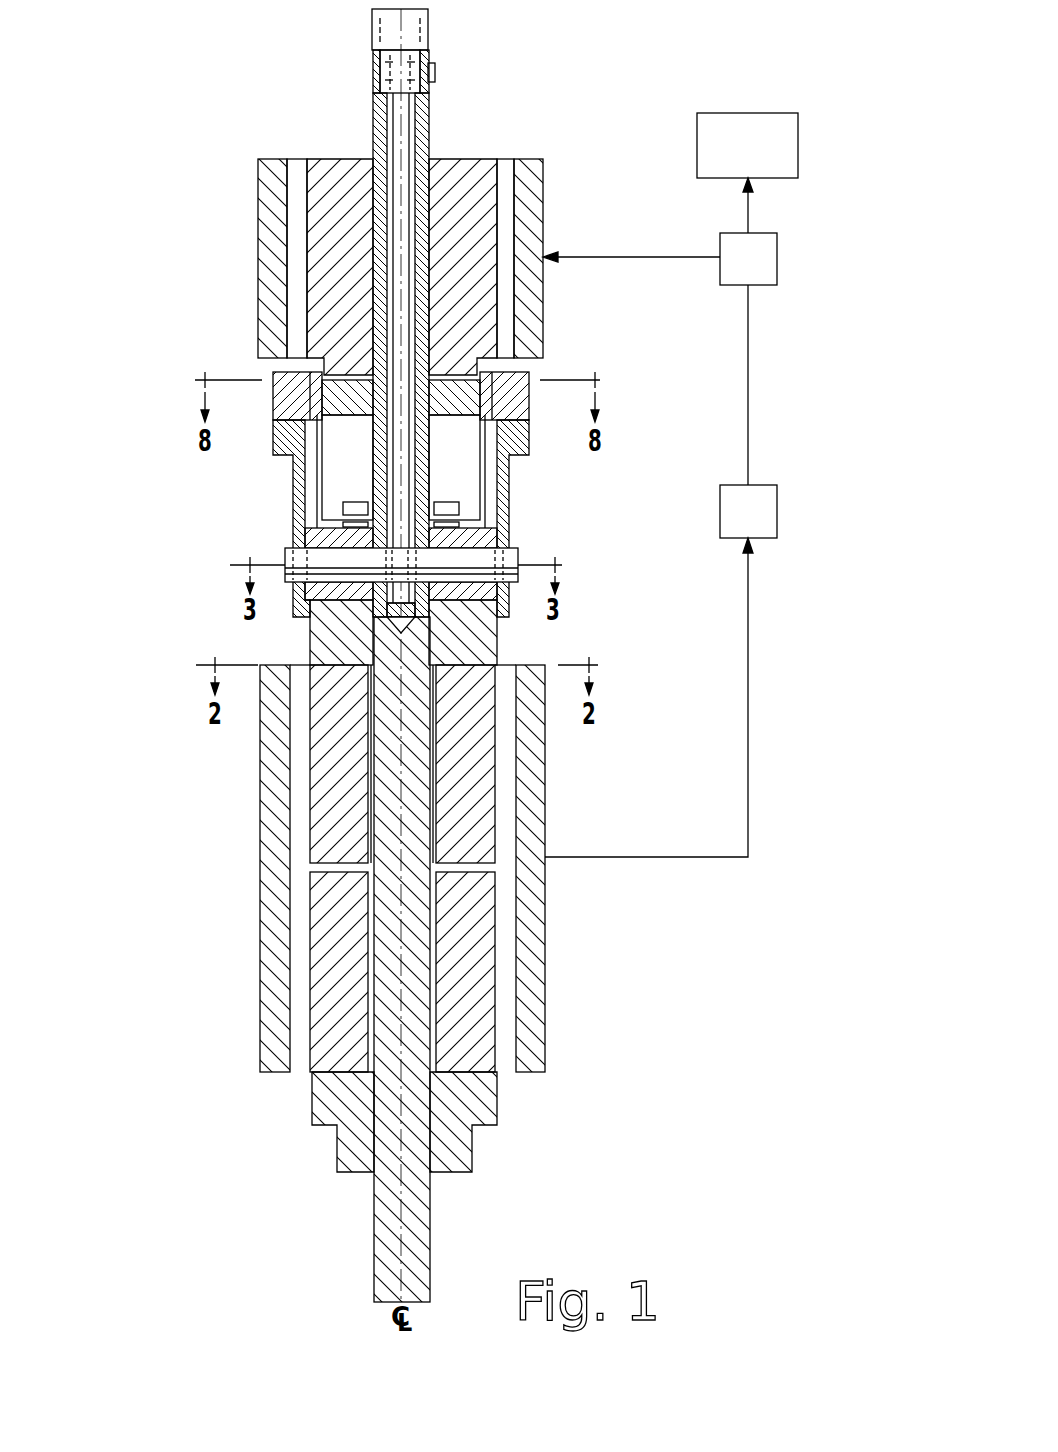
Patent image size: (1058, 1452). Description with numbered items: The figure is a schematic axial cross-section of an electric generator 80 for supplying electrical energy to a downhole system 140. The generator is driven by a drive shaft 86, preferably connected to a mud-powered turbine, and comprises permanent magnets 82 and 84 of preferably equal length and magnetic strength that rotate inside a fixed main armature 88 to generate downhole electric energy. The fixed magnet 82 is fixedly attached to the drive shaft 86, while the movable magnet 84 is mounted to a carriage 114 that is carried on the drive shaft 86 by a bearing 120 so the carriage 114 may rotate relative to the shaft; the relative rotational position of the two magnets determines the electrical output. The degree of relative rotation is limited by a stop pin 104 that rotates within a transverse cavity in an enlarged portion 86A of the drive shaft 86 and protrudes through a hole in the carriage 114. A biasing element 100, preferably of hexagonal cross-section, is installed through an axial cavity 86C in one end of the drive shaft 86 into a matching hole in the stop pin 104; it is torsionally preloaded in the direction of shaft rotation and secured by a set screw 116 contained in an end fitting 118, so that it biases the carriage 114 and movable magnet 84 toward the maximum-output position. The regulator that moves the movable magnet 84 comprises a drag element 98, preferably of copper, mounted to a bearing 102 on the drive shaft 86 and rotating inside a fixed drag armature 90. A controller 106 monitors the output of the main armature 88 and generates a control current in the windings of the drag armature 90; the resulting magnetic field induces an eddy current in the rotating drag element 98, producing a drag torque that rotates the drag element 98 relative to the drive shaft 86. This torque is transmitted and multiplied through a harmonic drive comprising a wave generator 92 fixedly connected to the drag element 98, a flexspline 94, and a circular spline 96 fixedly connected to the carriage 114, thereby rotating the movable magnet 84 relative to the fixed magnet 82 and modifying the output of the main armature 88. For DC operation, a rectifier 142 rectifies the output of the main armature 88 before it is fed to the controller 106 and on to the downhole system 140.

The electric generator 80 is at (575, 629).
The fixed magnet 82 is at (315, 978).
The movable magnet 84 is at (317, 787).
The drive shaft 86 is at (375, 1235).
The enlarged portion of drive shaft 86A is at (500, 538).
The axial cavity 86C is at (418, 617).
The main armature 88 is at (260, 851).
The drag armature 90 is at (258, 248).
The wave generator 92 is at (343, 407).
The flexspline 94 is at (480, 487).
The circular spline 96 is at (273, 391).
The drag element 98 is at (477, 167).
The biasing element 100 is at (397, 465).
The bearing 102 is at (368, 167).
The stop pin 104 is at (285, 556).
The controller 106 is at (769, 275).
The carriage 114 is at (315, 632).
The set screw 116 is at (435, 72).
The end fitting 118 is at (372, 29).
The bearing 120 is at (372, 763).
The downhole system 140 is at (769, 160).
The rectifier 142 is at (769, 527).